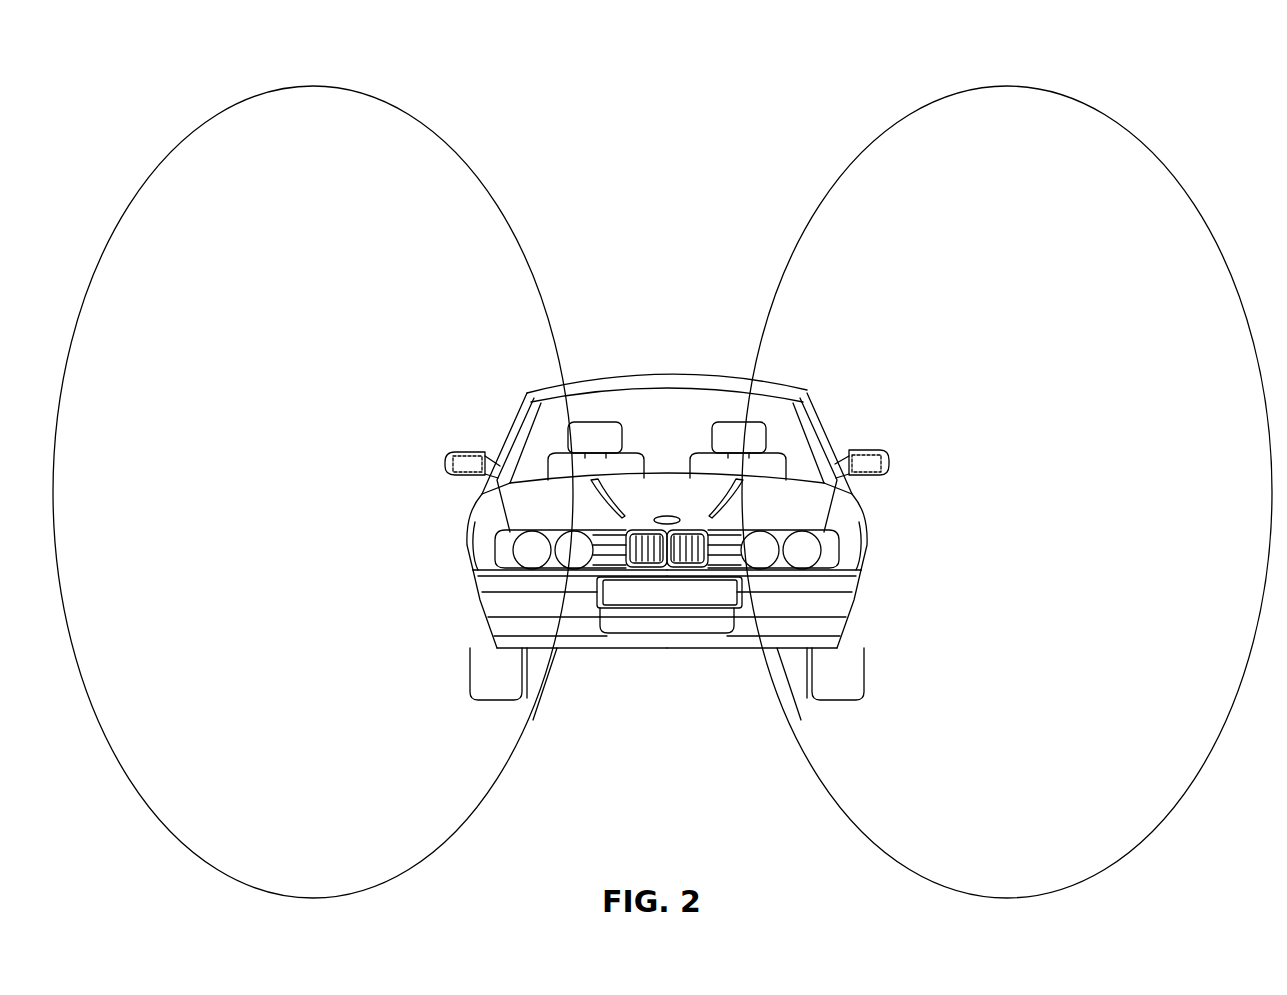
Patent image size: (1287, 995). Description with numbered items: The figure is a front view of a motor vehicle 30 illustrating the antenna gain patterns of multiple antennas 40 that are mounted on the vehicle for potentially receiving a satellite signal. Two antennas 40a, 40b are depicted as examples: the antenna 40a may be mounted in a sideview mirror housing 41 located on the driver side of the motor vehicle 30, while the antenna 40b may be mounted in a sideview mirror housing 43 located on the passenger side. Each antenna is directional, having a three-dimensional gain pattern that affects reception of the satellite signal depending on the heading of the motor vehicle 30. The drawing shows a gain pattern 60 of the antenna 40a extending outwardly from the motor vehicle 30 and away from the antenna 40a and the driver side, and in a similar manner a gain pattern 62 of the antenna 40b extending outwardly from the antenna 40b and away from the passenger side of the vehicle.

The motor vehicle 30 is at (658, 373).
The antennas 40 is at (671, 438).
The antenna 40a is at (920, 438).
The antenna 40b is at (418, 437).
The sideview mirror housing 41 is at (867, 448).
The sideview mirror housing 43 is at (468, 450).
The gain pattern 60 is at (1110, 118).
The gain pattern 62 is at (413, 122).